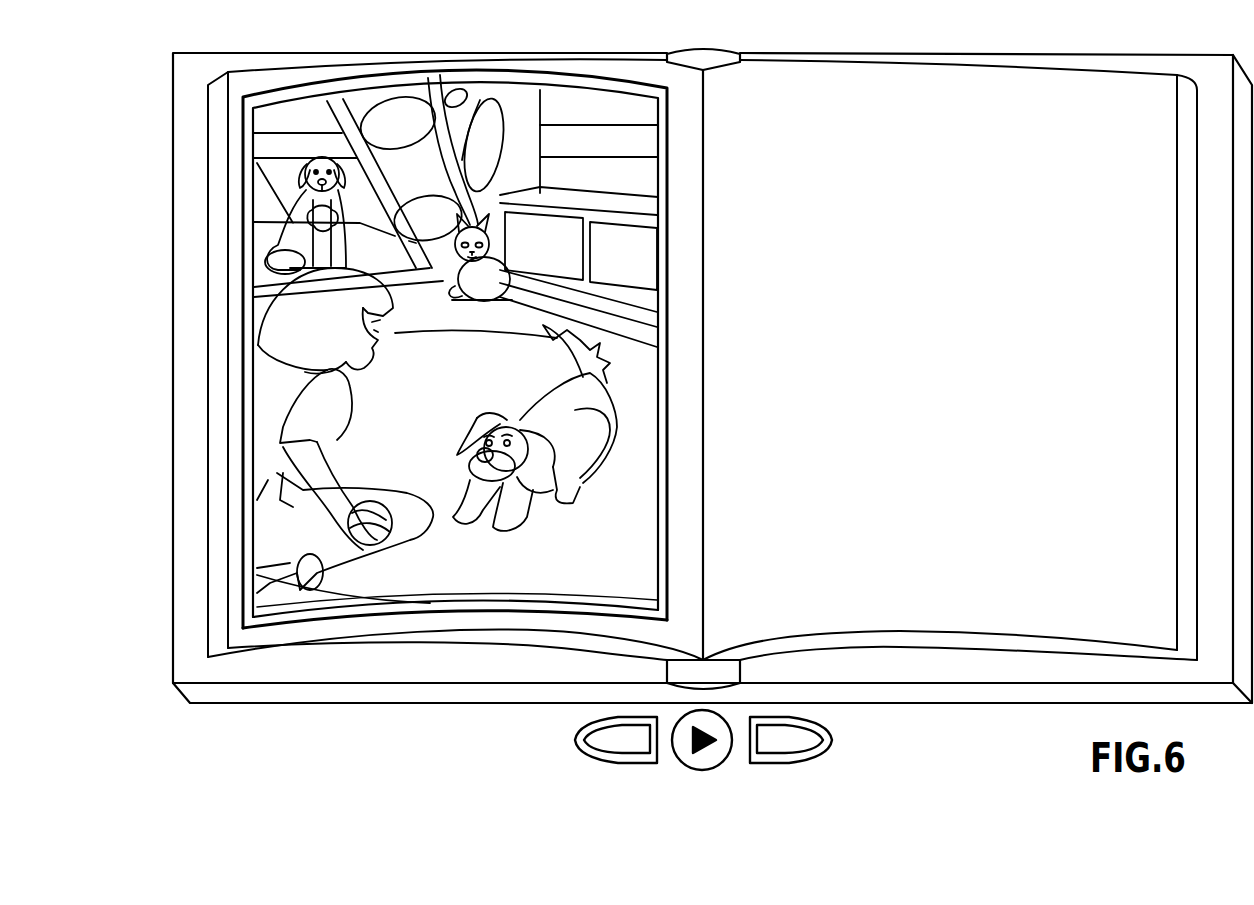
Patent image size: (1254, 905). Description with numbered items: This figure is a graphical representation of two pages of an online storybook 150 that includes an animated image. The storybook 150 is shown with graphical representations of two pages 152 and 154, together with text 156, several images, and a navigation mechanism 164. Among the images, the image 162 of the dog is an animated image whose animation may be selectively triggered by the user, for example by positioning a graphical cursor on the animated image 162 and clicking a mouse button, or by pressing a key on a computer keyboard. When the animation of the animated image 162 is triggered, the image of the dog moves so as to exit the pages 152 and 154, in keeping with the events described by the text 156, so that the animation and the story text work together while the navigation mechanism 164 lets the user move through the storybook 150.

The online storybook 150 is at (152, 105).
The page 152 is at (609, 575).
The page 154 is at (1127, 583).
The text 156 is at (1132, 382).
The animated image 162 is at (468, 437).
The navigation mechanism 164 is at (1005, 824).